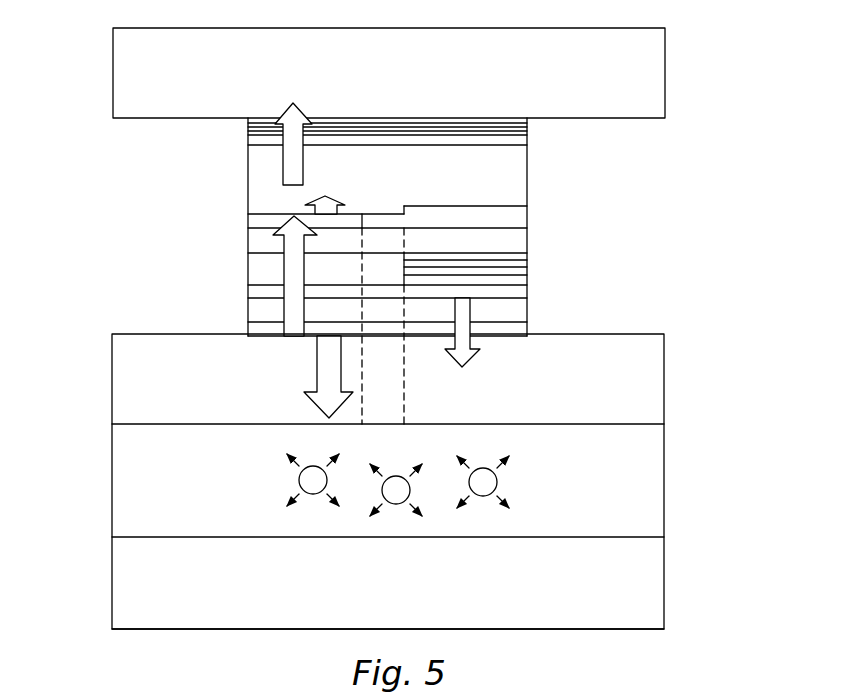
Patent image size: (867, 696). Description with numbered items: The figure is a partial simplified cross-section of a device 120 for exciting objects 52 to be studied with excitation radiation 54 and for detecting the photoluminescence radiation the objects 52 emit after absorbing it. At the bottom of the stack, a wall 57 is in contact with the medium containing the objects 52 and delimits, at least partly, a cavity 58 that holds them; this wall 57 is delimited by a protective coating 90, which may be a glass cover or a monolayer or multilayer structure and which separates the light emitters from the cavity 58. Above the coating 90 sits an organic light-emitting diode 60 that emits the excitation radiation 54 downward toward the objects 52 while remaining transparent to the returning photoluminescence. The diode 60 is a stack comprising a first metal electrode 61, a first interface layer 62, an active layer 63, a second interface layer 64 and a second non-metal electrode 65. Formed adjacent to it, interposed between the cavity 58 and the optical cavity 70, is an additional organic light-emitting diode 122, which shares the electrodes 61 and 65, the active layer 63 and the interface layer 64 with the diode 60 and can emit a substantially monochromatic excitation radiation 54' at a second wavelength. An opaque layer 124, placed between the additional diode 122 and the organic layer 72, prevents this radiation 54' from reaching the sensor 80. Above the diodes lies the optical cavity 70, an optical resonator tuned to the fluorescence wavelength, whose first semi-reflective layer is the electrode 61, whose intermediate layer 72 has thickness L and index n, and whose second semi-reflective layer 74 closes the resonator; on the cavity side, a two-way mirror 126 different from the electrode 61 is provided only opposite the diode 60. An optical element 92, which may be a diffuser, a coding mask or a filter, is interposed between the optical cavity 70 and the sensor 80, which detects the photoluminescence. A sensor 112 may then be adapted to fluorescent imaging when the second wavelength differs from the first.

The device 120 is at (698, 33).
The sensor 80 is at (653, 73).
The optical element 92 is at (515, 127).
The second semi-reflective layer 74 is at (513, 142).
The intermediate layer 72 is at (515, 192).
The optical cavity 70 is at (374, 219).
The opaque layer 124 is at (515, 220).
The two-way mirror 126 is at (257, 220).
The additional organic light-emitting diode 122 is at (530, 265).
The organic light-emitting diode 60 is at (370, 282).
The first metal electrode 61 is at (260, 242).
The first interface layer 62 is at (267, 277).
The active layer 63 is at (258, 293).
The second interface layer 64 is at (512, 307).
The second non-metal electrode 65 is at (257, 333).
The excitation radiation 54 is at (205, 377).
The excitation radiation 54' is at (518, 332).
The protective coating 90 is at (137, 392).
The wall 57 is at (612, 424).
The cavity 58 is at (137, 483).
The objects to be studied 52 is at (483, 482).
The sensor 112 is at (642, 590).